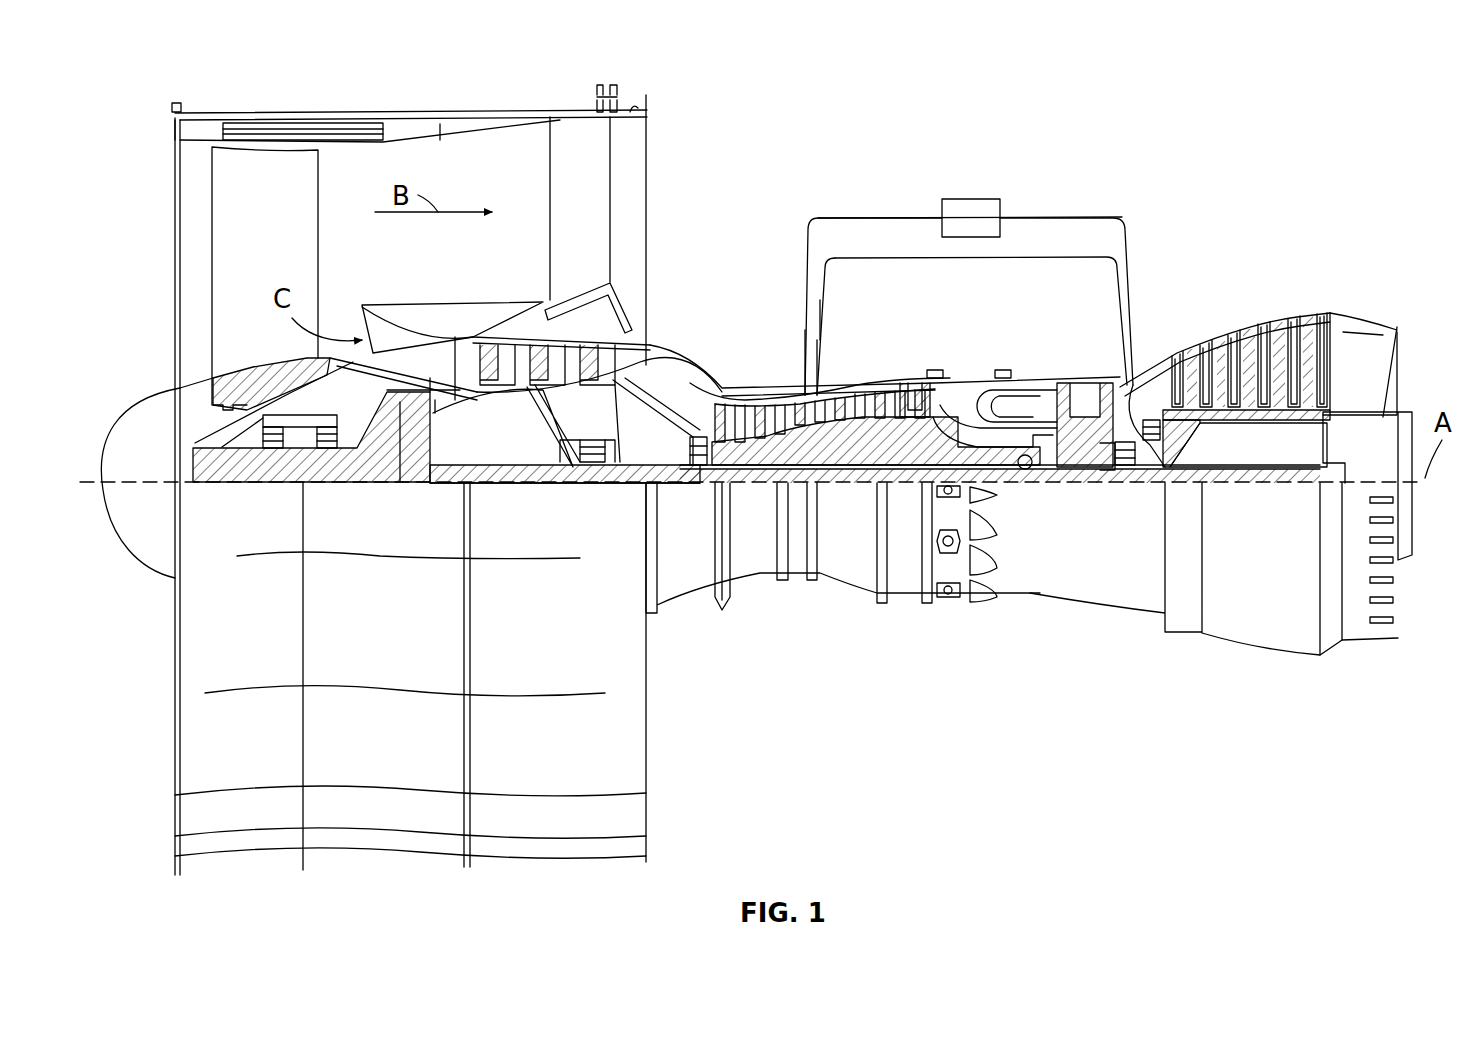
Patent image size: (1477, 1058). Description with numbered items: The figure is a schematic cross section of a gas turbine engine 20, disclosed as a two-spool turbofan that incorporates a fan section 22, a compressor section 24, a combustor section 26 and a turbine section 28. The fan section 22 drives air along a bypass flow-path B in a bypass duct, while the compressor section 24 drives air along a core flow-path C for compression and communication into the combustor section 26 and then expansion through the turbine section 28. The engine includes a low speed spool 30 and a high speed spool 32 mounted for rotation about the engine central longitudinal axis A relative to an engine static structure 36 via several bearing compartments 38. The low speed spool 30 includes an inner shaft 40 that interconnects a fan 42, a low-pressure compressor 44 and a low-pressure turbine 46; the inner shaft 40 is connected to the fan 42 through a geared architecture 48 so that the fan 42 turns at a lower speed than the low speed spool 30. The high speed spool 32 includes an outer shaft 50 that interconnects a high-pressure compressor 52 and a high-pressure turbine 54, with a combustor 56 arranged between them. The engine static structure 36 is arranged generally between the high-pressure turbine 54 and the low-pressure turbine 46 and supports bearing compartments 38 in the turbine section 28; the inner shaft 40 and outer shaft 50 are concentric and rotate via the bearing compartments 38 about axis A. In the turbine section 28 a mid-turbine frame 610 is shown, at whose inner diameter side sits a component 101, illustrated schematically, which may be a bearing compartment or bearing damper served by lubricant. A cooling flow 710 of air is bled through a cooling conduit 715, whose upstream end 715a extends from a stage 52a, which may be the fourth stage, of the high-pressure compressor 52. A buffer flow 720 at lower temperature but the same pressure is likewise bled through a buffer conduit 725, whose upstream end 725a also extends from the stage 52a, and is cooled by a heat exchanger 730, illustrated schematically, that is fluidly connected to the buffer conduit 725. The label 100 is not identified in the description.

The gas turbine engine 20 is at (1220, 150).
The fan section 22 is at (293, 100).
The compressor section 24 is at (855, 195).
The combustor section 26 is at (1003, 345).
The turbine section 28 is at (1150, 318).
The low speed spool 30 is at (866, 487).
The high speed spool 32 is at (920, 430).
The engine static structure 36 is at (906, 602).
The bearing compartments 38 is at (275, 455).
The inner shaft 40 is at (660, 492).
The fan 42 is at (290, 243).
The low-pressure compressor 44 is at (560, 360).
The low-pressure turbine 46 is at (1250, 340).
The geared architecture 48 is at (410, 460).
The outer shaft 50 is at (1040, 470).
The high-pressure compressor 52 is at (808, 445).
The stage 52a is at (830, 398).
The high-pressure turbine 54 is at (1090, 378).
The combustor 56 is at (1015, 395).
The nacelle 100 is at (235, 265).
The component 101 is at (265, 437).
The mid-turbine frame 610 is at (1135, 385).
The cooling flow 710 is at (824, 297).
The cooling conduit 715 is at (877, 256).
The upstream end 715a is at (821, 342).
The buffer flow 720 is at (1128, 228).
The buffer conduit 725 is at (1030, 216).
The upstream end 725a is at (807, 313).
The heat exchanger 730 is at (972, 198).